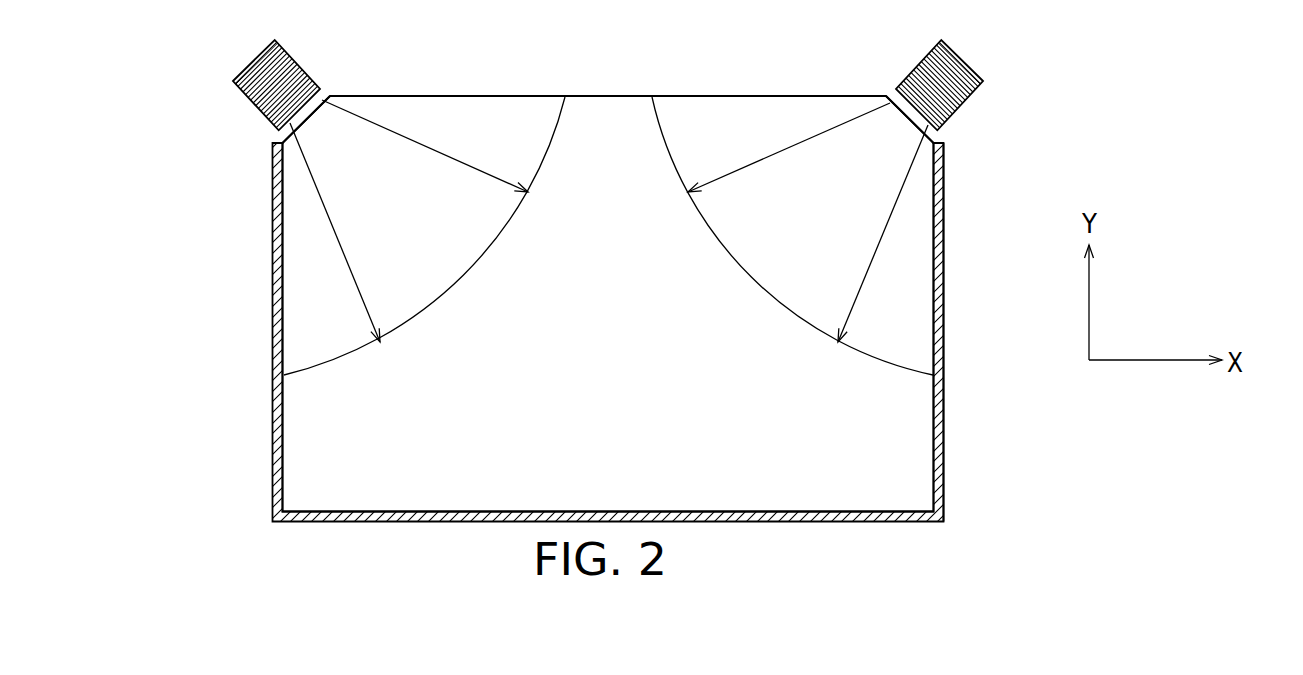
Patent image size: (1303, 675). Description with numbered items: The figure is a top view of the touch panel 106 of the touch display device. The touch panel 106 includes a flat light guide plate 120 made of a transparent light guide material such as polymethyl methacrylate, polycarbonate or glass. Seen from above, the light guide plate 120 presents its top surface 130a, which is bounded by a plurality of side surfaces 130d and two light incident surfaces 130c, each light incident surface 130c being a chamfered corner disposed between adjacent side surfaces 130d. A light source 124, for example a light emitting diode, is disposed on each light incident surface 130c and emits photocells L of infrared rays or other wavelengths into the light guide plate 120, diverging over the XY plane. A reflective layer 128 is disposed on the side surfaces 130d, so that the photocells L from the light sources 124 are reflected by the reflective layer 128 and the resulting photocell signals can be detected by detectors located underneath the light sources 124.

The touch panel 106 is at (1117, 548).
The light guide plate 120 is at (907, 460).
The light source 124 is at (252, 78).
The reflective layer 128 is at (938, 405).
The top surface 130a is at (500, 135).
The light incident surface 130c is at (324, 100).
The side surface 130d is at (622, 96).
The photocell L is at (317, 207).